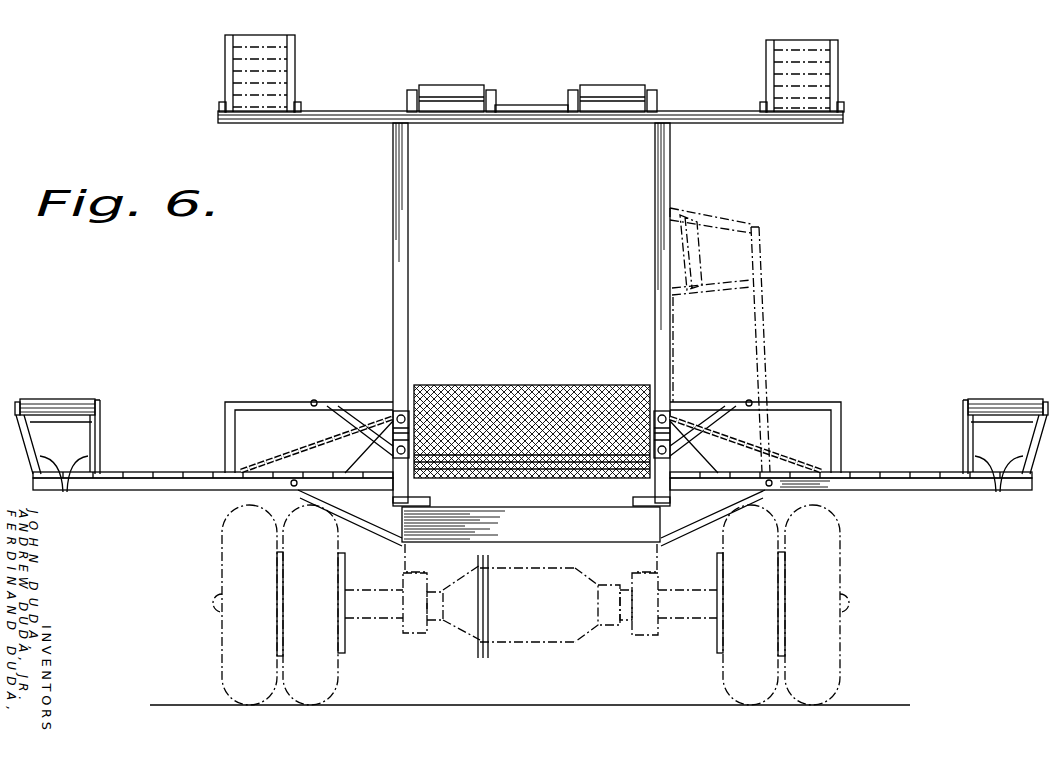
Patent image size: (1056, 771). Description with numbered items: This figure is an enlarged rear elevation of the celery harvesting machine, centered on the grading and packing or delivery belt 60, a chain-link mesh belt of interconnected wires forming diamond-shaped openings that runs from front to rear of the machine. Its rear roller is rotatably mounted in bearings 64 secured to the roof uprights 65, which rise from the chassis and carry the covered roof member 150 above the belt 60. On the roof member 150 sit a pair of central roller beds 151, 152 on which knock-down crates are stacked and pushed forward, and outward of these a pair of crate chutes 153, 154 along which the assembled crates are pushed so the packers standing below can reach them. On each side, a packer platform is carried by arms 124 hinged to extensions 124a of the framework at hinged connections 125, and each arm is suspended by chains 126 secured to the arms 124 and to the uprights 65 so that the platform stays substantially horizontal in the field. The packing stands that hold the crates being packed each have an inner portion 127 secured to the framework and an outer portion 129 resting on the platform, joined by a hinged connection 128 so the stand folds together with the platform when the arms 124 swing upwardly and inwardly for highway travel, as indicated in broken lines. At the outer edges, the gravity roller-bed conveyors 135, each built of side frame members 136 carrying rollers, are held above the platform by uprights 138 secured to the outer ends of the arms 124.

The grading and packing or delivery belt 60 is at (505, 384).
The bearings 64 is at (391, 412).
The roof uprights 65 is at (393, 285).
The arms 124 is at (158, 483).
The extensions 124a is at (358, 468).
The hinged connections 125 is at (290, 494).
The chains 126 is at (320, 440).
The inner portion 127 is at (176, 456).
The hinged connection 128 is at (311, 401).
The outer portion 129 is at (242, 392).
The conveyors 135 is at (102, 372).
The side frame members 136 is at (18, 404).
The uprights 138 is at (62, 483).
The roof member 150 is at (495, 123).
The roller bed 151 is at (465, 74).
The roller bed 152 is at (634, 70).
The crate chute 153 is at (300, 108).
The crate chute 154 is at (844, 105).